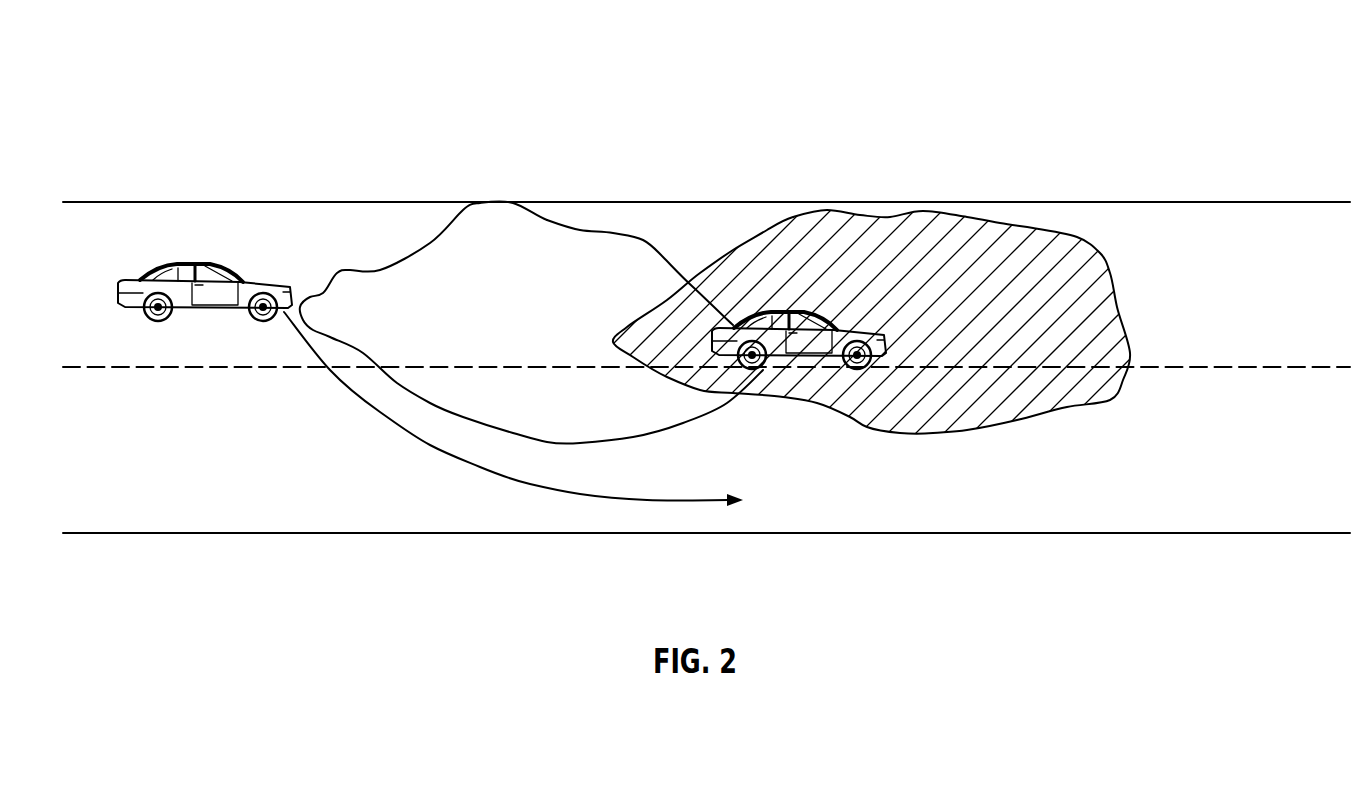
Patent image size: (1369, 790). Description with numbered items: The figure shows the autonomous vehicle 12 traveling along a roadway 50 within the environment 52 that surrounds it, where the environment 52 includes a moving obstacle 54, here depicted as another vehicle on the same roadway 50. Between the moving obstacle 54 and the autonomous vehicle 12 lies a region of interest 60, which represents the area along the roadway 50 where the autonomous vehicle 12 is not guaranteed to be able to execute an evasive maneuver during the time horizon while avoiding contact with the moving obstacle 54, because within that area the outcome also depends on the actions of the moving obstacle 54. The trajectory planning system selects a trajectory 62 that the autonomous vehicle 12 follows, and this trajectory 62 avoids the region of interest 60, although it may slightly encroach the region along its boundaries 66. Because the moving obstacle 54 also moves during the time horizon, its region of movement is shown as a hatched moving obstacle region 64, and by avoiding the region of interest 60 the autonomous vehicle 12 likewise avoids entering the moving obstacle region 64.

The autonomous vehicle 12 is at (177, 263).
The roadway 50 is at (115, 215).
The environment 52 is at (120, 97).
The moving obstacle 54 is at (802, 327).
The region of interest 60 is at (498, 215).
The trajectory 62 is at (643, 500).
The moving obstacle region 64 is at (1020, 262).
The boundaries 66 is at (607, 233).